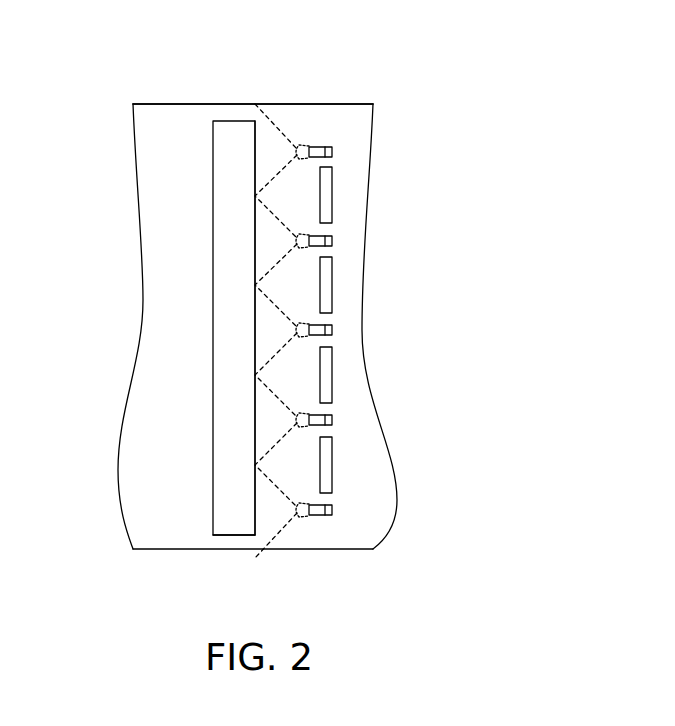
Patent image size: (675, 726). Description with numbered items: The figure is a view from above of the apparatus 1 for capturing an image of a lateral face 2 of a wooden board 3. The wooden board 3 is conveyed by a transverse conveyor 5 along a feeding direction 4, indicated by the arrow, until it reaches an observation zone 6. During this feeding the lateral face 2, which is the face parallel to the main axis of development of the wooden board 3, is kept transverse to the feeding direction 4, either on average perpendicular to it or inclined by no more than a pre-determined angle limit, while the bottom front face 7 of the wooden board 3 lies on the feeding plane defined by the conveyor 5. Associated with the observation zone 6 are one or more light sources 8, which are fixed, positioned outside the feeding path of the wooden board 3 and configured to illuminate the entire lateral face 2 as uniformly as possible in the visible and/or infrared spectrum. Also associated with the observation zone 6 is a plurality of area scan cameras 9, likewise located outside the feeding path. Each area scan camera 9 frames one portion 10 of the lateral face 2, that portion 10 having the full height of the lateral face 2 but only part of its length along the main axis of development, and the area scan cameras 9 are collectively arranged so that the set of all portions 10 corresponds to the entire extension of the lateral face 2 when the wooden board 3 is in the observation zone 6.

The apparatus 1 is at (433, 107).
The lateral face 2 is at (271, 355).
The wooden board 3 is at (240, 481).
The feeding direction 4 is at (254, 69).
The conveyor 5 is at (327, 119).
The observation zone 6 is at (275, 558).
The bottom front face 7 is at (222, 378).
The light source 8 is at (325, 202).
The area scan camera 9 is at (332, 152).
The portion 10 is at (258, 240).